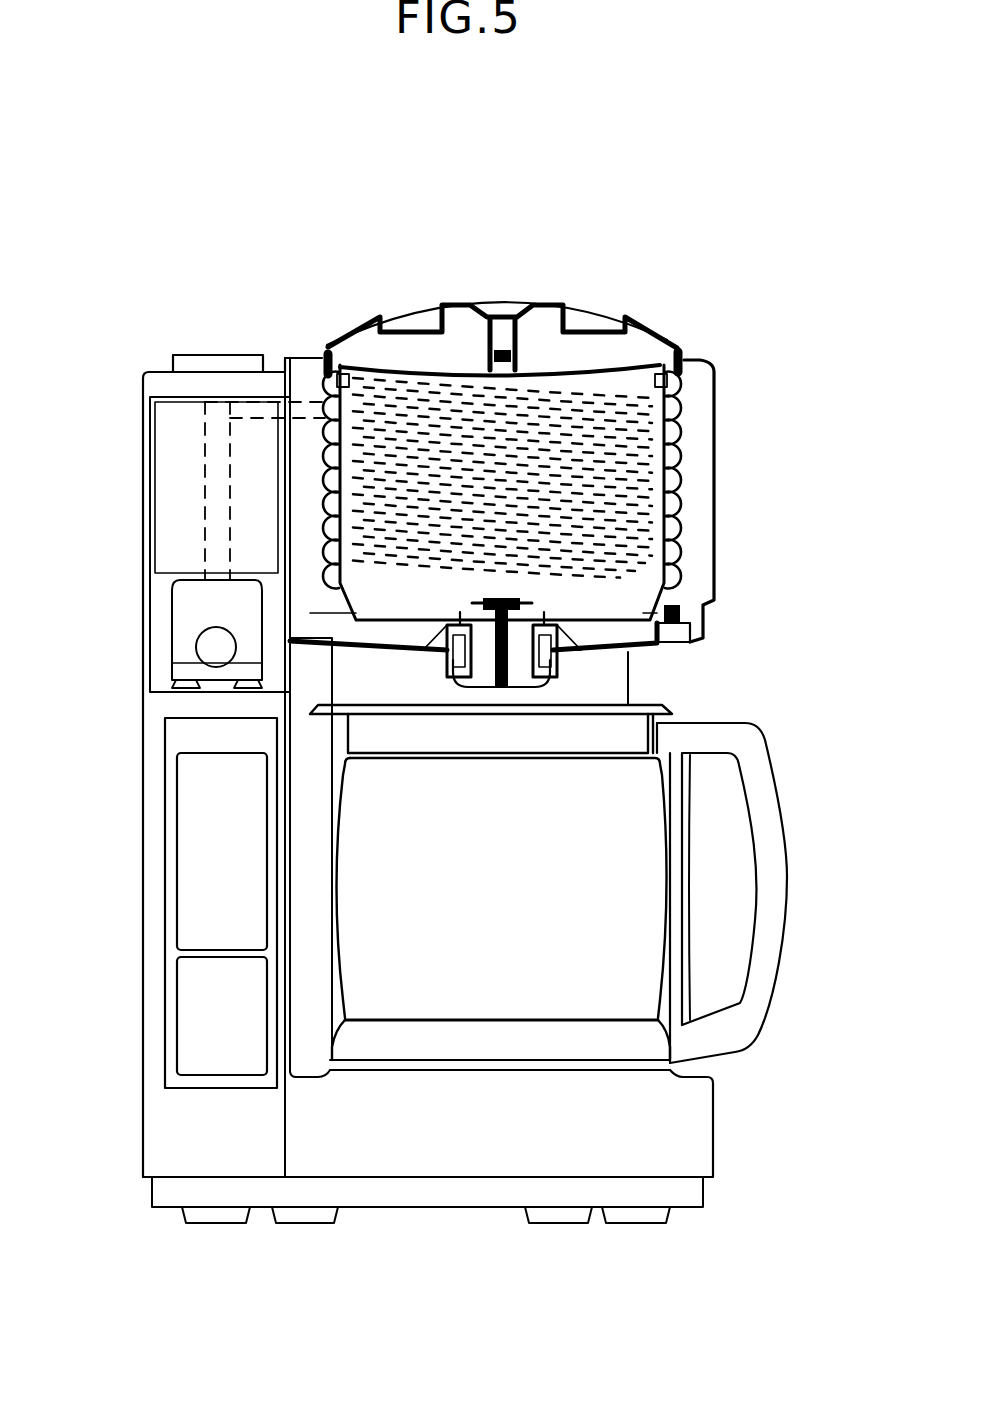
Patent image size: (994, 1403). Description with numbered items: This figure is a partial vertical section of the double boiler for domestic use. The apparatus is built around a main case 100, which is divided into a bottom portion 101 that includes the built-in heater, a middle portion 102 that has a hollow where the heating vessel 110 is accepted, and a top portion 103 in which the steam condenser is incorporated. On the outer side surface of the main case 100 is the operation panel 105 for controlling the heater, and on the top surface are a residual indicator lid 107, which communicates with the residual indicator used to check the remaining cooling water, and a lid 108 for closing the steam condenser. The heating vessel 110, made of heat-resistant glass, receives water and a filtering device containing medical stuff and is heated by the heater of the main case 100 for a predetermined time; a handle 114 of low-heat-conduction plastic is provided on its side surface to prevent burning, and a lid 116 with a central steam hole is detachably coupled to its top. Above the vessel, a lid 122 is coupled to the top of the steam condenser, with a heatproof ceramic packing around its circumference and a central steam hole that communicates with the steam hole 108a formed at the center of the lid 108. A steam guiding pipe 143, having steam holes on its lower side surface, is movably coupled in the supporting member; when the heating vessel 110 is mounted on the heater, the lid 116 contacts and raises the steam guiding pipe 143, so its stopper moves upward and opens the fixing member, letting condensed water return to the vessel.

The main case 100 is at (696, 231).
The bottom portion 101 is at (713, 1127).
The middle portion 102 is at (337, 1017).
The top portion 103 is at (717, 407).
The operation panel 105 is at (245, 860).
The residual indicator lid 107 is at (220, 360).
The lid 108 is at (492, 303).
The steam hole 108a is at (502, 315).
The heating vessel 110 is at (663, 903).
The handle 114 is at (760, 787).
The lid 116 is at (407, 690).
The lid 122 is at (645, 322).
The steam guiding pipe 143 is at (550, 687).